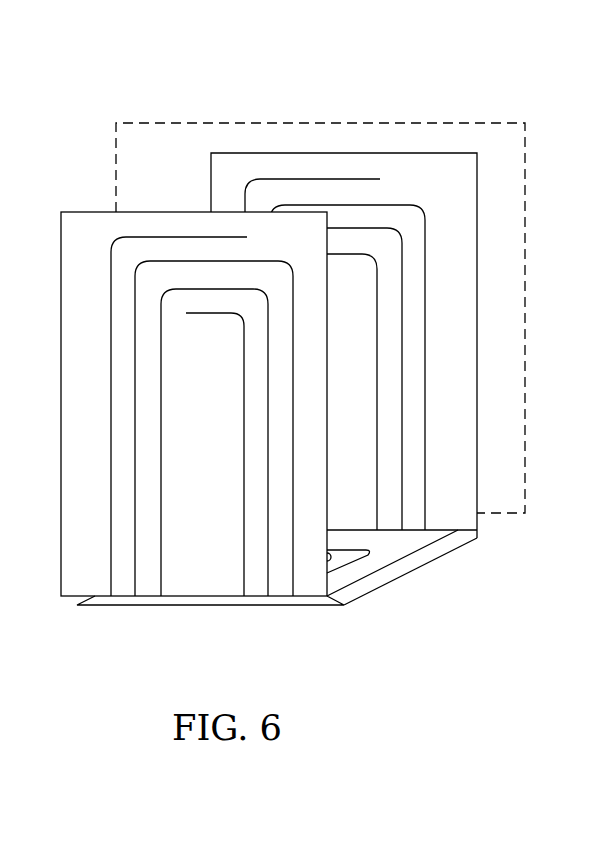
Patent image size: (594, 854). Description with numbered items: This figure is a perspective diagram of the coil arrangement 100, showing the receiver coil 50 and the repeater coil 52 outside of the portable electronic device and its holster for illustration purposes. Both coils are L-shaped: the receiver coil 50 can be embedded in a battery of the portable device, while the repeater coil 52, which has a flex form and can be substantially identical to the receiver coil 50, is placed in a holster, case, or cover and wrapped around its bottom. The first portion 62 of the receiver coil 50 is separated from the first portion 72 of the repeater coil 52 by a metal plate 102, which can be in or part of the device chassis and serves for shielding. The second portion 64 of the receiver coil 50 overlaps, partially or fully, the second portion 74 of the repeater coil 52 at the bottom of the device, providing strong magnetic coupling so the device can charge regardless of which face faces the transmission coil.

The coil arrangement 100 is at (350, 56).
The metal plate 102 is at (525, 203).
The receiver coil 50 is at (172, 237).
The repeater coil 52 is at (408, 205).
The first portion of the receiver coil 62 is at (88, 212).
The first portion of the repeater coil 72 is at (477, 341).
The second portion of the receiver coil 64 is at (365, 576).
The second portion of the repeater coil 74 is at (435, 558).